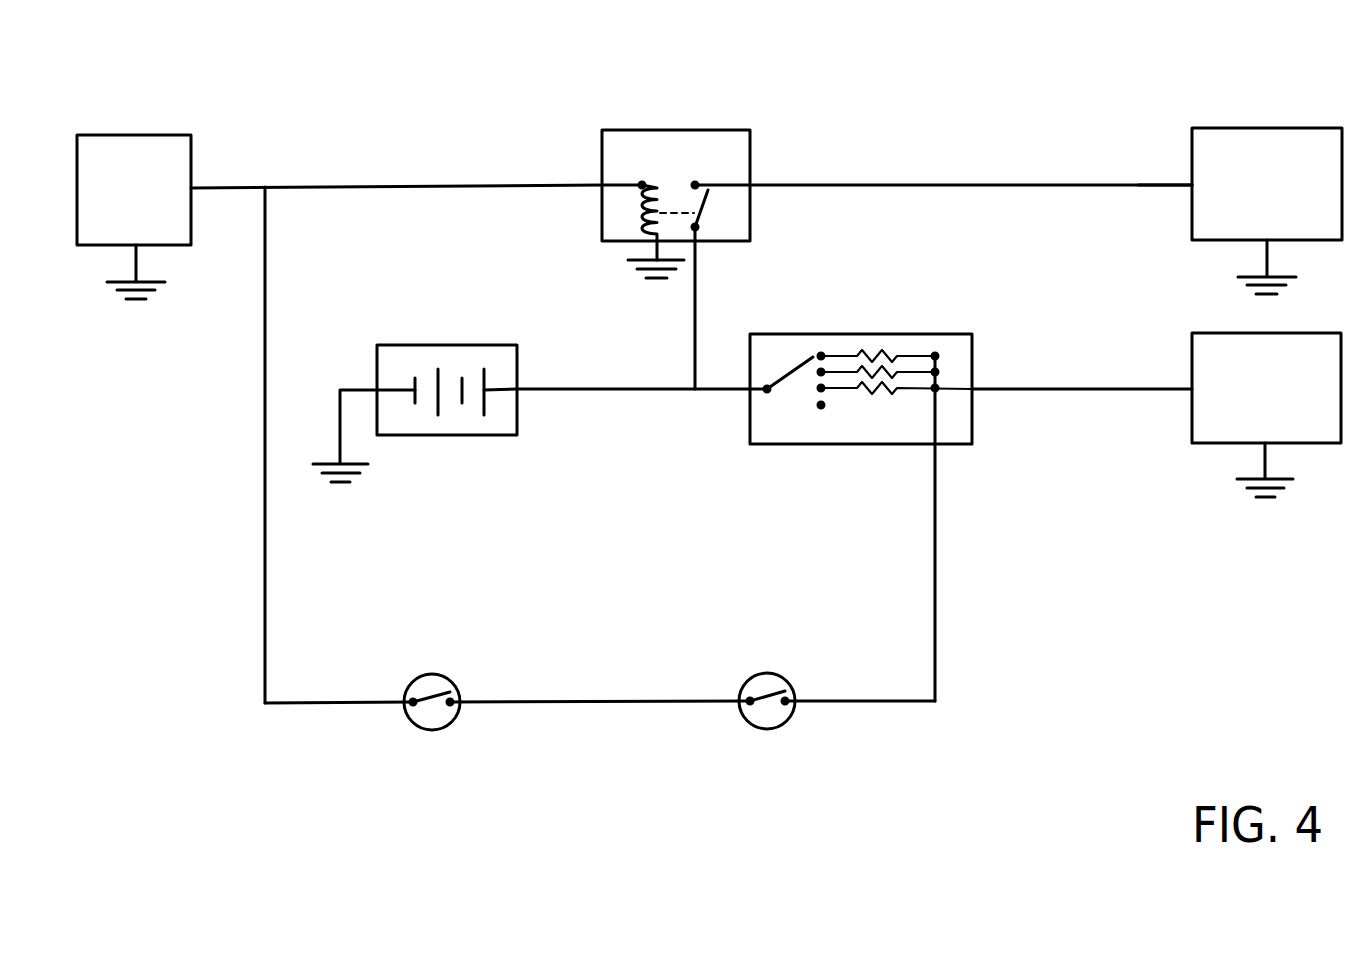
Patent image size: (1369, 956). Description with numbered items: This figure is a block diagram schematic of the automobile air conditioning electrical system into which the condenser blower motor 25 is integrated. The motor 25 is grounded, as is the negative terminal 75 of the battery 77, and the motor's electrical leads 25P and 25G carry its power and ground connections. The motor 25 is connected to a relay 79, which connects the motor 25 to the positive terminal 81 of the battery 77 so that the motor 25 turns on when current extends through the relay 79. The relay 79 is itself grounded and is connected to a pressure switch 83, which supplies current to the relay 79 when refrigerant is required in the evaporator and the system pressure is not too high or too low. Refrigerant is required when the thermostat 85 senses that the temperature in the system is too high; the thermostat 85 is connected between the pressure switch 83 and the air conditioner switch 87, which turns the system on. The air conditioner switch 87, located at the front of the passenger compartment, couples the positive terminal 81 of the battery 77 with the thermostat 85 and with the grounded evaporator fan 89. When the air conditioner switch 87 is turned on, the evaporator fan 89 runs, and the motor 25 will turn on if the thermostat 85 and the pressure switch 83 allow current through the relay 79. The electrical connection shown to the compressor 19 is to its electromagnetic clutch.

The compressor 19 is at (163, 168).
The relay 79 is at (695, 148).
The motor 25 is at (1235, 137).
The electrical lead 25P is at (1138, 184).
The electrical lead 25G is at (1267, 253).
The negative terminal 75 is at (412, 390).
The battery 77 is at (444, 409).
The positive terminal 81 is at (486, 390).
The pressure switch 83 is at (422, 711).
The thermostat 85 is at (762, 716).
The air conditioner switch 87 is at (953, 430).
The evaporator fan 89 is at (1230, 429).